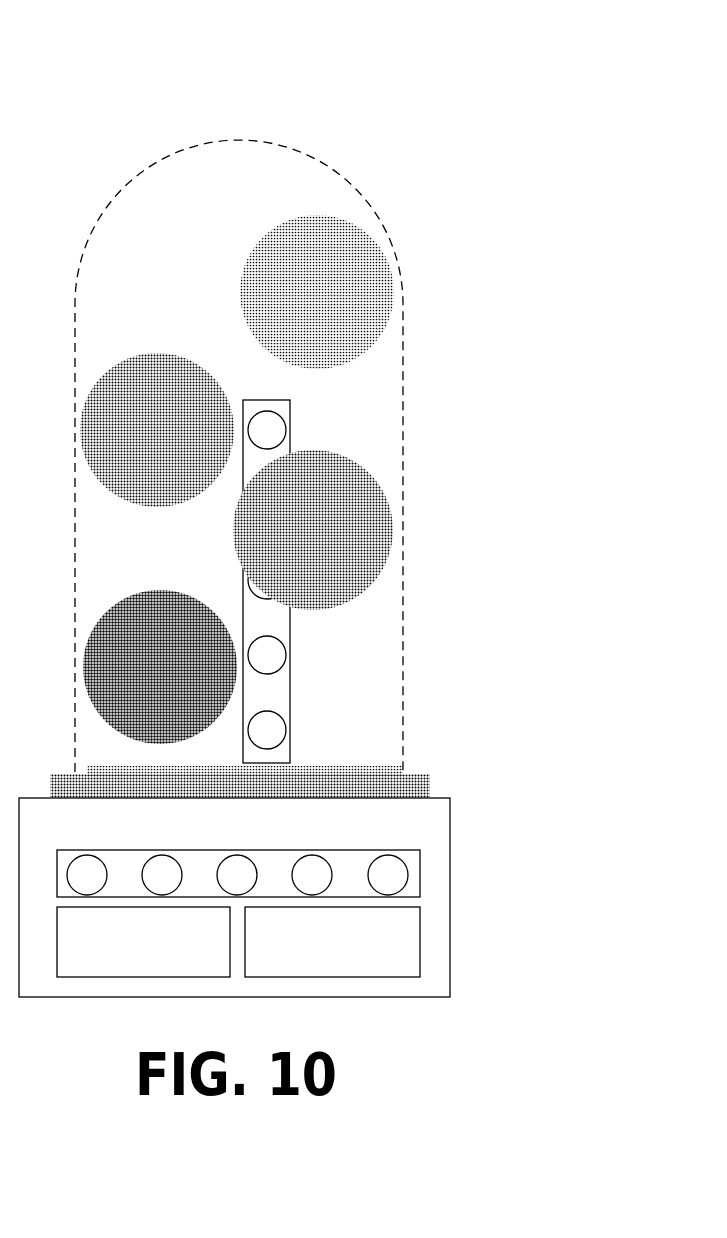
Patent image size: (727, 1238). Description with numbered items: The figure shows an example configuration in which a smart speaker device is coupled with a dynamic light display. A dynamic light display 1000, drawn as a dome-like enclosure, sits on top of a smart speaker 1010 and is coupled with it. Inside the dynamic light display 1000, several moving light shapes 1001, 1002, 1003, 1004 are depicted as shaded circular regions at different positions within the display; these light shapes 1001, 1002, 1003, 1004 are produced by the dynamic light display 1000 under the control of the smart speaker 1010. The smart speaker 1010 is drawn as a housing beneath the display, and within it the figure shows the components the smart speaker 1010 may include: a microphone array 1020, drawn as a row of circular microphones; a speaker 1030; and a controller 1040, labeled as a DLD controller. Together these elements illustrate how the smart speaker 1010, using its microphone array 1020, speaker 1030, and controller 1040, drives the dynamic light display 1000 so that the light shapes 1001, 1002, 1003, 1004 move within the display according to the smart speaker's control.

The dynamic light display 1000 is at (183, 123).
The light shape 1001 is at (317, 292).
The light shape 1002 is at (157, 430).
The light shape 1003 is at (313, 530).
The light shape 1004 is at (160, 667).
The smart speaker 1010 is at (354, 835).
The microphone array 1020 is at (285, 705).
The speaker 1030 is at (143, 942).
The controller 1040 is at (332, 942).